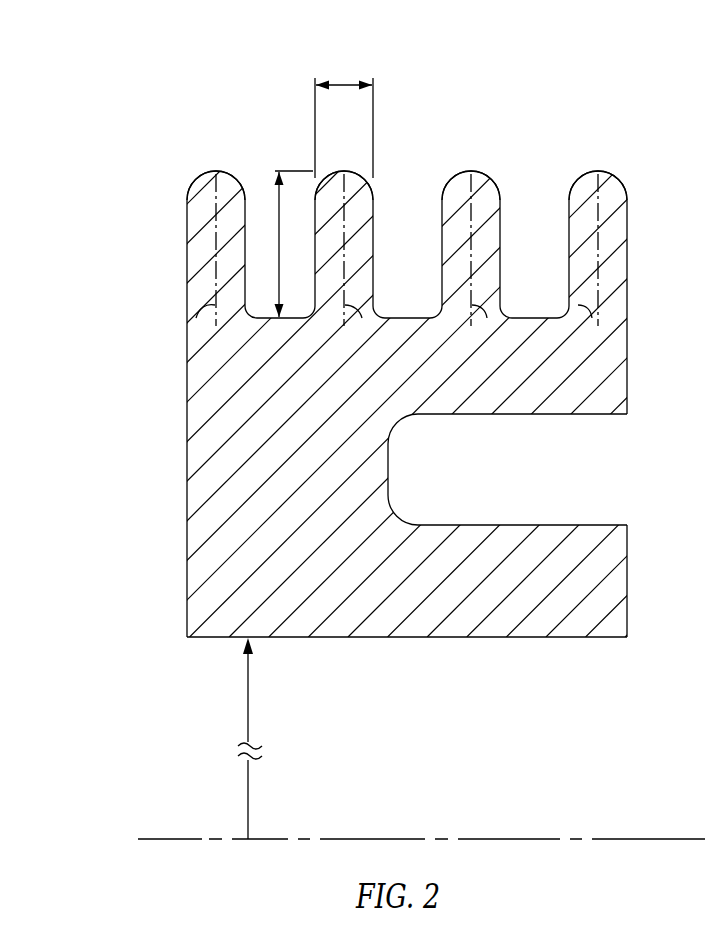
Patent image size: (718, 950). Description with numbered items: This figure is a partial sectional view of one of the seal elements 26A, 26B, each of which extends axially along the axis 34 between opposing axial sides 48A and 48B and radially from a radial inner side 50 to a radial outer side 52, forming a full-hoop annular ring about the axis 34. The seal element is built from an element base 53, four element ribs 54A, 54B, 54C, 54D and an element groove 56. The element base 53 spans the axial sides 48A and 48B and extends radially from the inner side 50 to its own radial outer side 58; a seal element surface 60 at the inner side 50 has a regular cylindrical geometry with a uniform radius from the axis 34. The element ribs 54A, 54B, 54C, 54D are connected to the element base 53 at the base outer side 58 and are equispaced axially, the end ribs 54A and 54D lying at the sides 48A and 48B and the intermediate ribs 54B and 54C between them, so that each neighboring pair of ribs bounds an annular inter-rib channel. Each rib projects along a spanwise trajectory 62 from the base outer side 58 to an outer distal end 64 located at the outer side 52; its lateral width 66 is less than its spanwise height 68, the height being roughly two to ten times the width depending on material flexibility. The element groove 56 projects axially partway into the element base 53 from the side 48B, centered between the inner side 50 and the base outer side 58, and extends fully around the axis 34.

The seal element 26A is at (359, 435).
The seal element 26B is at (359, 435).
The axis 34 is at (152, 838).
The first axial side 48A is at (186, 607).
The second axial side 48B is at (628, 607).
The radial inner side 50 is at (213, 640).
The radial outer side 52 is at (214, 174).
The element base 53 is at (271, 470).
The end element rib 54A is at (176, 256).
The intermediate element rib 54B is at (386, 245).
The intermediate element rib 54C is at (513, 245).
The end element rib 54D is at (641, 243).
The element groove 56 is at (477, 484).
The radial outer side of element base 58 is at (246, 313).
The seal element surface 60 is at (394, 682).
The spanwise trajectory 62 is at (200, 315).
The outer distal end 64 is at (409, 147).
The lateral width 66 is at (343, 85).
The spanwise height 68 is at (288, 244).